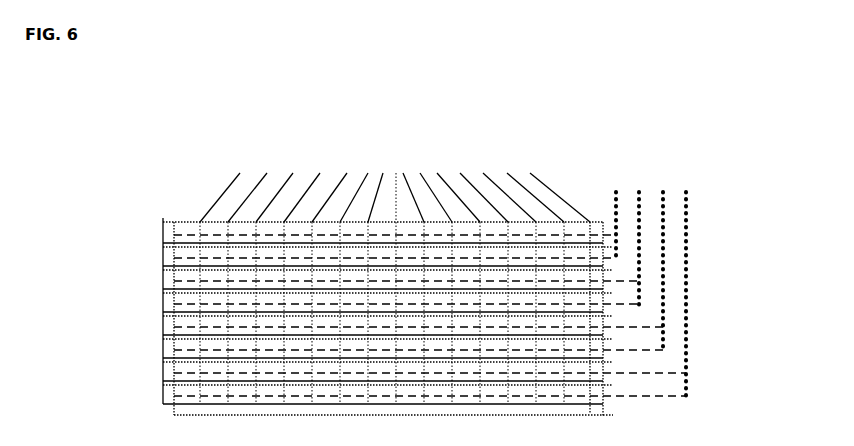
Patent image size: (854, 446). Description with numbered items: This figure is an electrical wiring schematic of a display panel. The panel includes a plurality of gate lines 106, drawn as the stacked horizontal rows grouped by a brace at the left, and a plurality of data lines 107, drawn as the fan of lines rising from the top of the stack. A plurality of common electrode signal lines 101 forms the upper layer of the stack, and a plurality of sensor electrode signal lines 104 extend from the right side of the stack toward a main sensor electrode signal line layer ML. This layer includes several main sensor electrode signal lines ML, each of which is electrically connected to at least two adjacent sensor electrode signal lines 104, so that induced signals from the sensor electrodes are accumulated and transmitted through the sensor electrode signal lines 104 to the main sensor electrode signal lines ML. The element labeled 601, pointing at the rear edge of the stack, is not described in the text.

The common electrode signal lines 101 is at (163, 218).
The sensor electrode signal lines 104 is at (697, 230).
The gate lines 106 is at (112, 392).
The data lines 107 is at (537, 168).
The staircase contact region 601 is at (603, 222).
The main sensor electrode signal lines ML is at (690, 190).